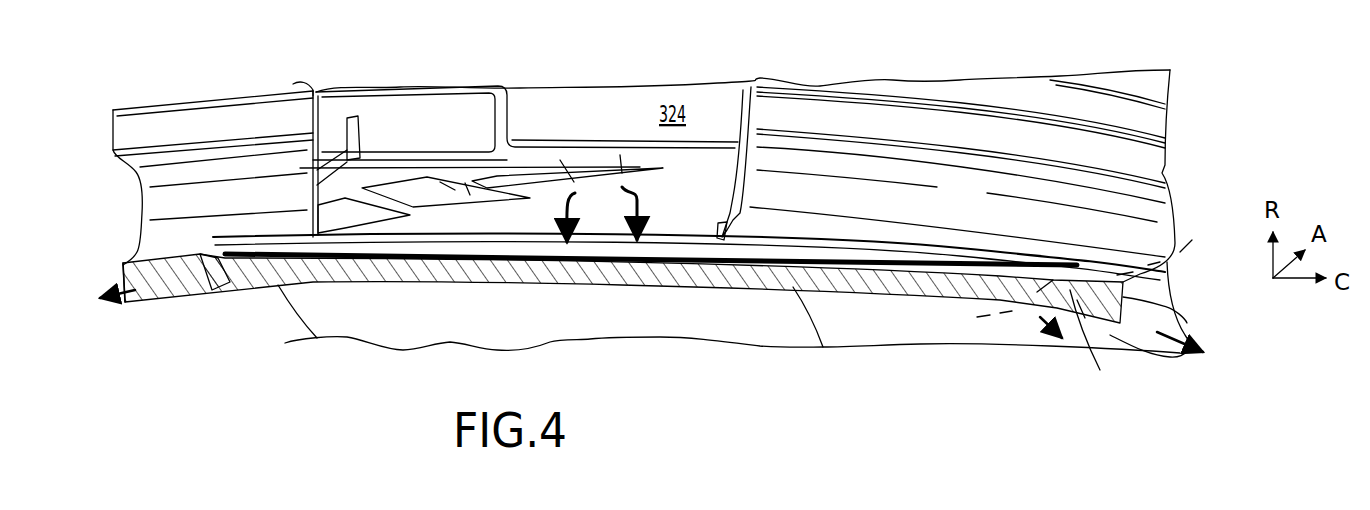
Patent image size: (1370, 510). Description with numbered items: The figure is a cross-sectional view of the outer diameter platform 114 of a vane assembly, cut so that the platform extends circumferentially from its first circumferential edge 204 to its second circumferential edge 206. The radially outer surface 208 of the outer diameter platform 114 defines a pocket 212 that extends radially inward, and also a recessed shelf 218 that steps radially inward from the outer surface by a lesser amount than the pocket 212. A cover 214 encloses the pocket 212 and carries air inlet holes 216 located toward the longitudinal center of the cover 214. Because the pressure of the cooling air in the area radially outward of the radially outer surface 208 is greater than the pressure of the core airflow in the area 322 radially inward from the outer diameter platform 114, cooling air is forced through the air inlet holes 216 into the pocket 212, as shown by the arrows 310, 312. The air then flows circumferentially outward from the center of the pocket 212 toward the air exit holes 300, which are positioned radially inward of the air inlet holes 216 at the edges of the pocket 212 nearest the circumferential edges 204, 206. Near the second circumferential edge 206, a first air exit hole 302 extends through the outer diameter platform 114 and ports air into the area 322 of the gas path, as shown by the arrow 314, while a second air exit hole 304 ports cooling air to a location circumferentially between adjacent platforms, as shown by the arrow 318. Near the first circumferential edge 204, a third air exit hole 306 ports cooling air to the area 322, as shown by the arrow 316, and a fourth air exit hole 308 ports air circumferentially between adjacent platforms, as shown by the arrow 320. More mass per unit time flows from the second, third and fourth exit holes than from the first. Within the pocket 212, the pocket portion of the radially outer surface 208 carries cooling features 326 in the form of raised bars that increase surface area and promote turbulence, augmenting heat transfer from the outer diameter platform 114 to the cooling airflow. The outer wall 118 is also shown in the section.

The outer diameter platform 114 is at (893, 80).
The outer wall 118 is at (1047, 127).
The first circumferential edge 204 is at (1168, 128).
The second circumferential edge 206 is at (118, 143).
The radially outer surface 208 is at (190, 230).
The pocket 212 is at (1008, 264).
The cover 214 is at (393, 255).
The air inlet holes 216 is at (690, 233).
The recessed shelf 218 is at (215, 258).
The air exit holes 300 is at (233, 296).
The first air exit hole 302 is at (220, 296).
The second air exit hole 304 is at (123, 270).
The third air exit hole 306 is at (1043, 316).
The fourth air exit hole 308 is at (1165, 320).
The arrow 310 is at (555, 148).
The arrow 312 is at (620, 143).
The arrow 314 is at (181, 312).
The arrow 316 is at (938, 329).
The arrow 318 is at (151, 262).
The arrow 320 is at (1183, 250).
The area 322 is at (729, 319).
The cooling features 326 is at (848, 288).